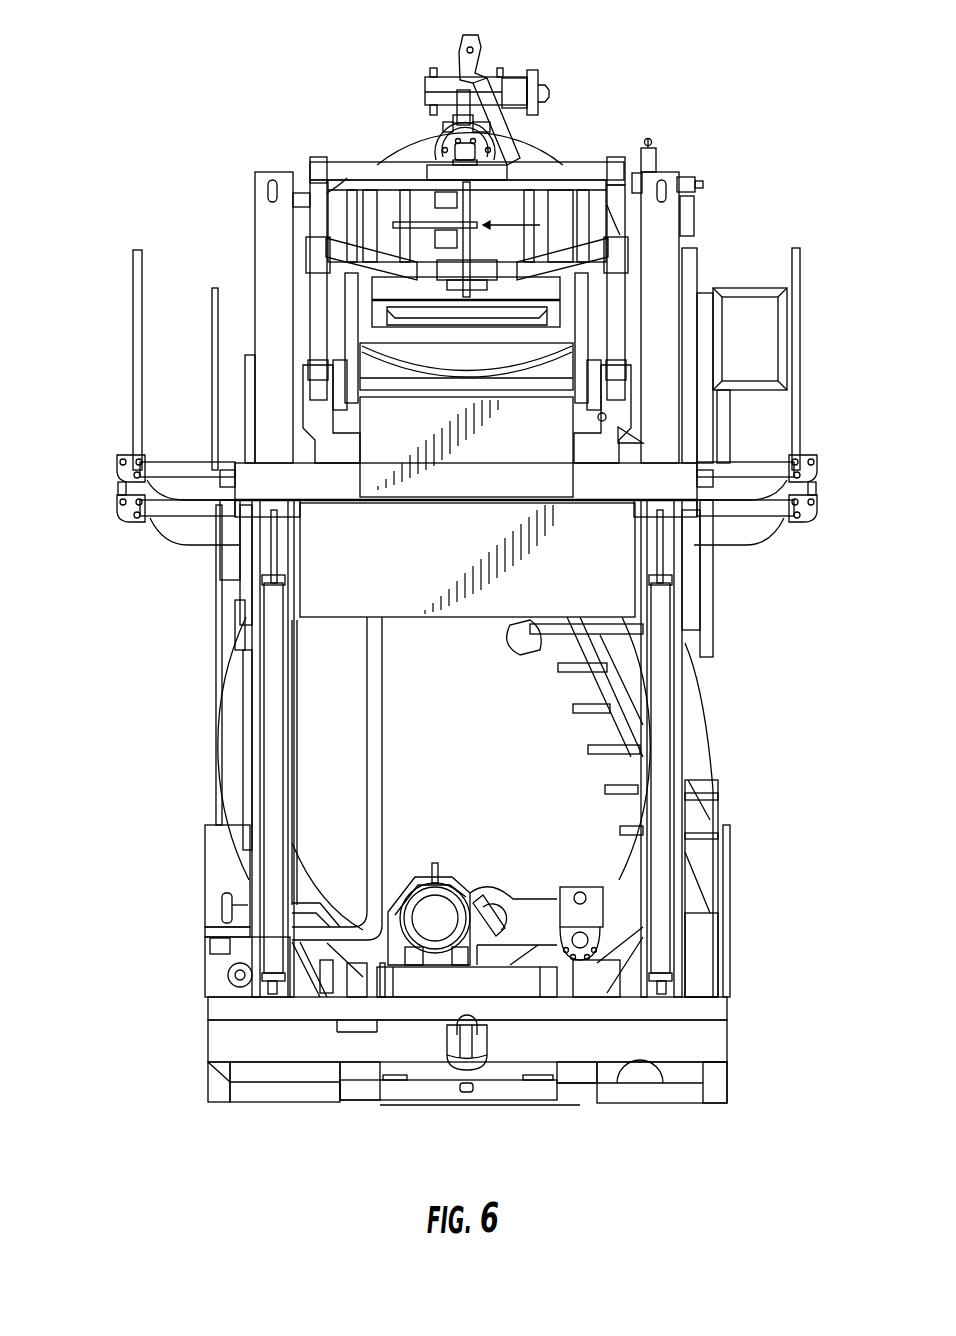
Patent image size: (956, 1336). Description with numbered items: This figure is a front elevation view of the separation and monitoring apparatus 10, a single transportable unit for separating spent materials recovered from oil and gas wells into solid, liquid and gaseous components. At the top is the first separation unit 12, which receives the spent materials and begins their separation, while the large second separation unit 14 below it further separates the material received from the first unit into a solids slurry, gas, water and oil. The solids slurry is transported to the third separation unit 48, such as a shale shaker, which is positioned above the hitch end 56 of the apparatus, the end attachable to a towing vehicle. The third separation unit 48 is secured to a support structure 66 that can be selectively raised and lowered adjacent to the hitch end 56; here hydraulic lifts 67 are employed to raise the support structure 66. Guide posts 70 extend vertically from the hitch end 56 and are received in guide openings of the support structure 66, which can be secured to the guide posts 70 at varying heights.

The separation and monitoring apparatus 10 is at (96, 298).
The first separation unit 12 is at (407, 153).
The second separation unit 14 is at (490, 783).
The third separation unit 48 is at (706, 146).
The hitch end 56 is at (707, 1046).
The support structure 66 is at (673, 488).
The hydraulic lifts 67 is at (275, 650).
The guide posts 70 is at (262, 755).